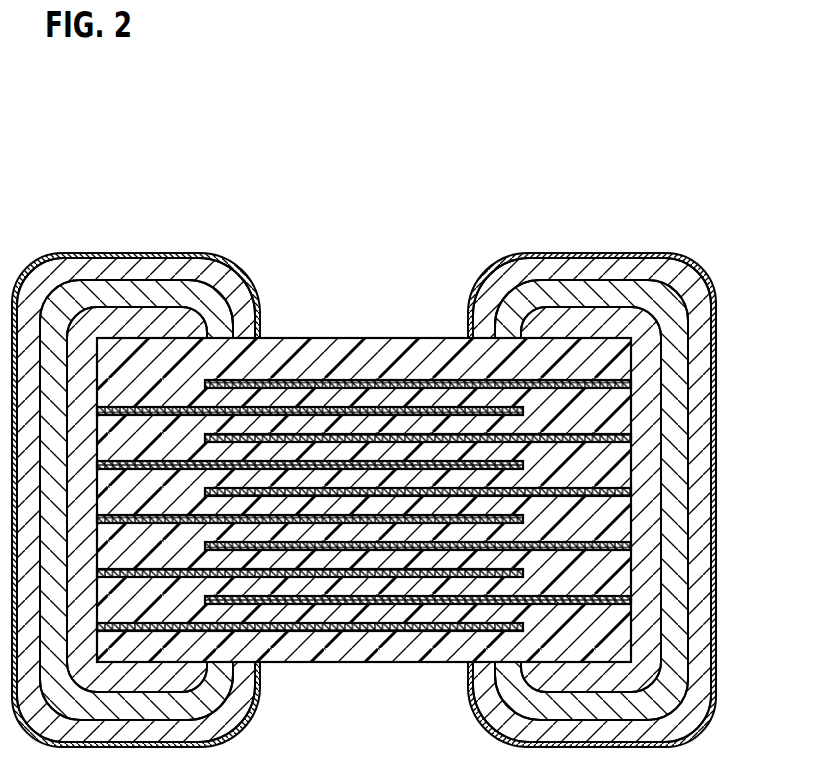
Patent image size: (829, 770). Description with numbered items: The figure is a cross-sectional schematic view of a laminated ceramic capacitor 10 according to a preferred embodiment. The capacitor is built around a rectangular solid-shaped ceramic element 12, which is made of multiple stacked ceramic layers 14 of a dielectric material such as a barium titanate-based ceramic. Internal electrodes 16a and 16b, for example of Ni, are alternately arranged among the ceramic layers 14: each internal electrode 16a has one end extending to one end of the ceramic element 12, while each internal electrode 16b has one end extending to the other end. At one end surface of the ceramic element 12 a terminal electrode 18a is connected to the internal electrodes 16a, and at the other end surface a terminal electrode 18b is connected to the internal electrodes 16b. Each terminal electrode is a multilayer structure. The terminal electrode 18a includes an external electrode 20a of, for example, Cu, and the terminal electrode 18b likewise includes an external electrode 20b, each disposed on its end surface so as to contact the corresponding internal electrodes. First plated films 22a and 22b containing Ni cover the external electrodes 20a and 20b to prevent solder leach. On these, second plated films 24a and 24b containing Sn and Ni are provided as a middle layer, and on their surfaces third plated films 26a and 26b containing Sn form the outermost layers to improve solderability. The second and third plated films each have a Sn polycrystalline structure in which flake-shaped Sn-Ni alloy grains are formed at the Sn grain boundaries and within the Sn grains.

The laminated ceramic capacitor 10 is at (382, 130).
The ceramic element 12 is at (364, 449).
The ceramic layers 14 is at (455, 428).
The internal electrode 16a is at (360, 383).
The internal electrode 16b is at (275, 412).
The terminal electrode 18a is at (582, 452).
The terminal electrode 18b is at (147, 452).
The external electrode 20a is at (614, 447).
The external electrode 20b is at (117, 447).
The first plated film 22a is at (605, 287).
The first plated film 22b is at (123, 290).
The second plated film 24a is at (565, 265).
The second plated film 24b is at (162, 267).
The third plated film 26a is at (497, 270).
The third plated film 26b is at (230, 270).